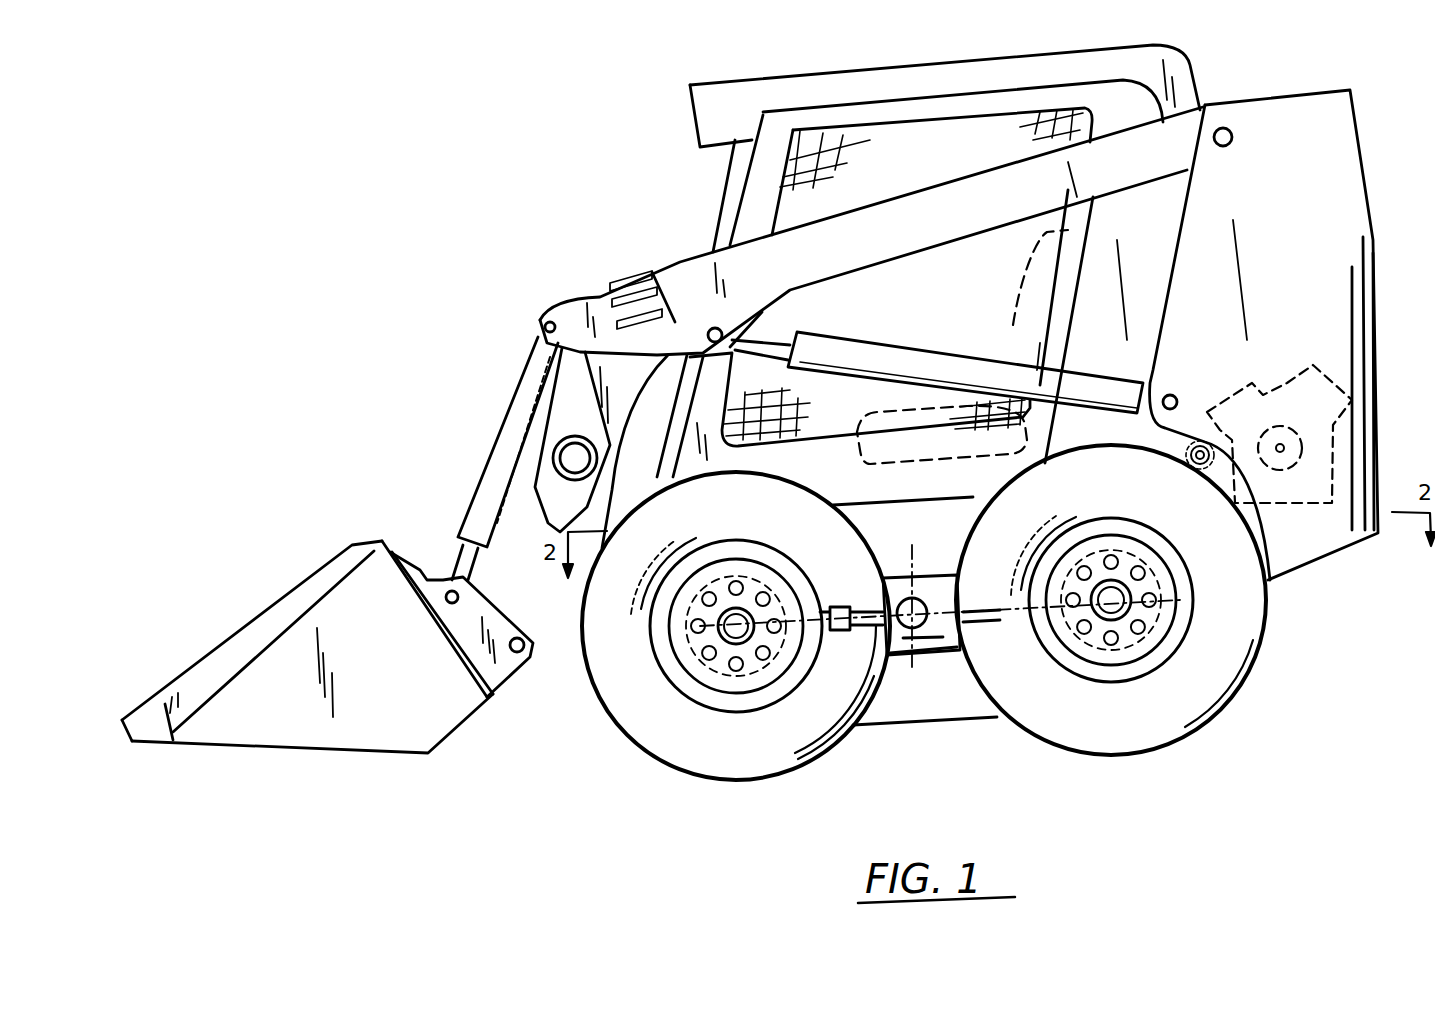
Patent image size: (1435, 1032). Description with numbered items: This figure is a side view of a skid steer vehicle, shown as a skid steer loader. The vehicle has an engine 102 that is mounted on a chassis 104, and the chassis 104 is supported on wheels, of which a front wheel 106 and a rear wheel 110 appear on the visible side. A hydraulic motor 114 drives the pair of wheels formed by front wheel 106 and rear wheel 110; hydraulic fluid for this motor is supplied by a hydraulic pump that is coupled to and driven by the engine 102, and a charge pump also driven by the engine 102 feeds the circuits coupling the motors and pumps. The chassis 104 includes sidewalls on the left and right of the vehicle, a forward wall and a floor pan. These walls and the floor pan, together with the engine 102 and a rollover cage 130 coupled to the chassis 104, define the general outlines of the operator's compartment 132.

The engine 102 is at (1263, 383).
The chassis 104 is at (938, 538).
The front wheel 106 is at (747, 754).
The rear wheel 110 is at (1133, 727).
The hydraulic motor 114 is at (923, 600).
The rollover cage 130 is at (912, 187).
The operator's compartment 132 is at (907, 300).